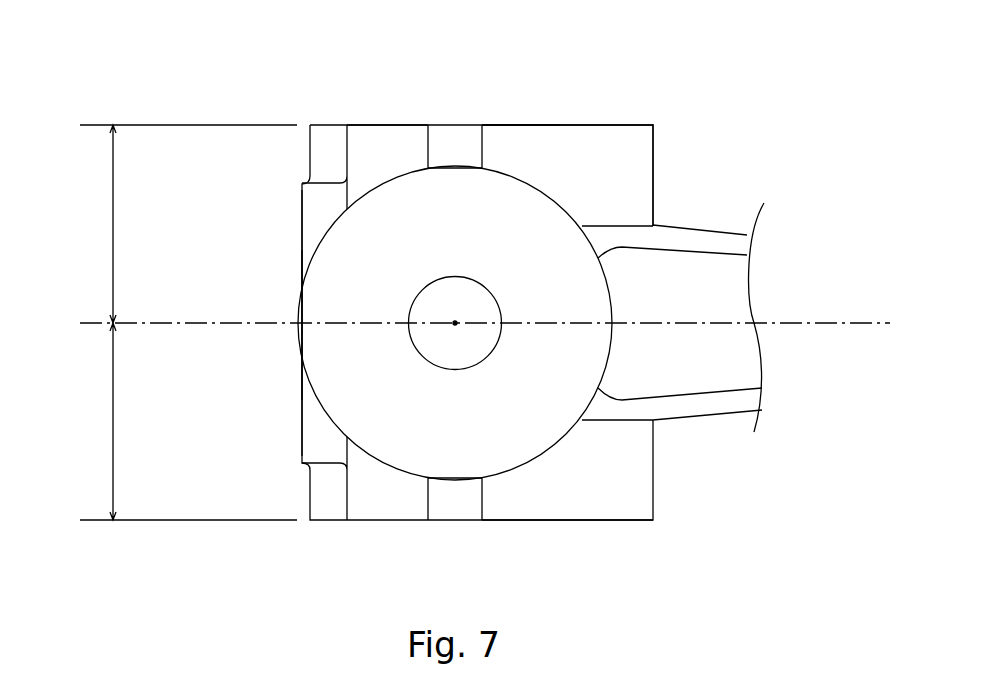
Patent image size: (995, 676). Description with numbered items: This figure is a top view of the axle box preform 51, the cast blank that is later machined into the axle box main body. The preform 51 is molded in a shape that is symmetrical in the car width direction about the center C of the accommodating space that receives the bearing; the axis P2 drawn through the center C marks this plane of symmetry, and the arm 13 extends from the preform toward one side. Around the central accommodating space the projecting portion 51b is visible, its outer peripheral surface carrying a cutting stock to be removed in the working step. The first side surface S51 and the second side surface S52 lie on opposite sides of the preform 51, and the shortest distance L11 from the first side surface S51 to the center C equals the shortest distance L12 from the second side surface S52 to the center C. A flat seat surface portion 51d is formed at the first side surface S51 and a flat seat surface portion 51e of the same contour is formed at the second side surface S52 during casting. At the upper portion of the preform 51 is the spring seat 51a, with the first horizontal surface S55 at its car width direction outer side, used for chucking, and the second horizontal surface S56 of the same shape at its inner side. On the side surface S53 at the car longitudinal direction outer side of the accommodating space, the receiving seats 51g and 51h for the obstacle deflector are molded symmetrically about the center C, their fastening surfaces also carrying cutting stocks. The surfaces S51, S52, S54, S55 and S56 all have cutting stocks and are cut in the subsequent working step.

The axle box preform 51 is at (621, 124).
The spring seat 51a is at (310, 338).
The projecting portion 51b is at (468, 297).
The seat surface portion 51d is at (580, 521).
The seat surface portion 51e is at (563, 124).
The receiving seat 51g is at (318, 213).
The receiving seat 51h is at (242, 304).
The arm 13 is at (710, 235).
The center of the accommodating space C is at (455, 323).
The axis P2 is at (100, 322).
The shortest distance L11 is at (182, 421).
The shortest distance L12 is at (182, 224).
The first side surface S51 is at (400, 521).
The second side surface S52 is at (400, 124).
The side surface S53 is at (318, 124).
The surface S54 is at (504, 124).
The first horizontal surface S55 is at (463, 521).
The second horizontal surface S56 is at (452, 124).